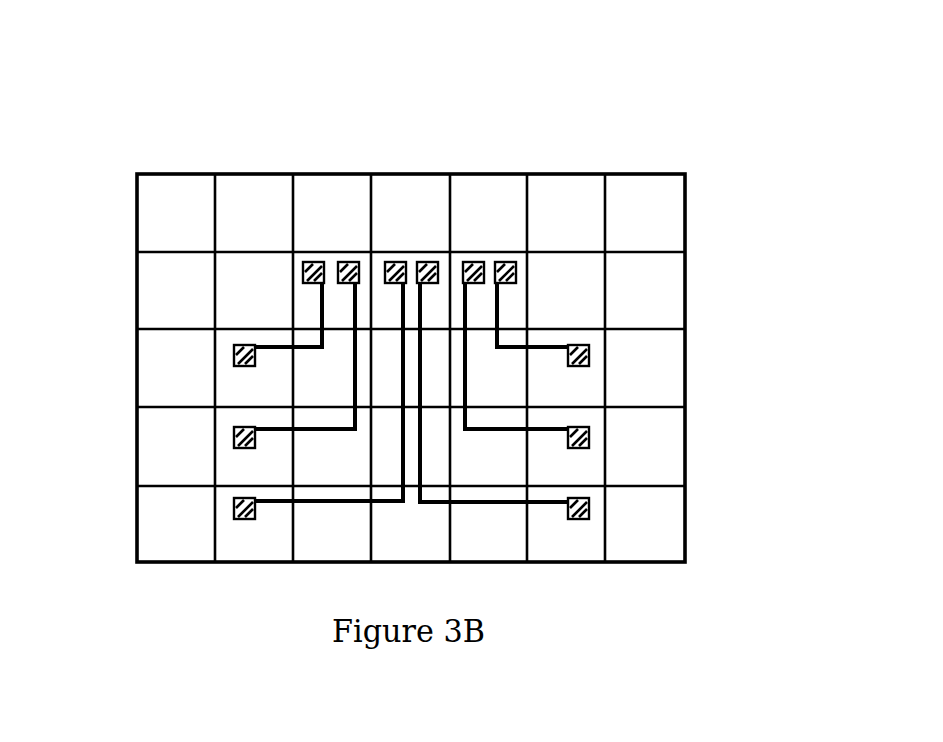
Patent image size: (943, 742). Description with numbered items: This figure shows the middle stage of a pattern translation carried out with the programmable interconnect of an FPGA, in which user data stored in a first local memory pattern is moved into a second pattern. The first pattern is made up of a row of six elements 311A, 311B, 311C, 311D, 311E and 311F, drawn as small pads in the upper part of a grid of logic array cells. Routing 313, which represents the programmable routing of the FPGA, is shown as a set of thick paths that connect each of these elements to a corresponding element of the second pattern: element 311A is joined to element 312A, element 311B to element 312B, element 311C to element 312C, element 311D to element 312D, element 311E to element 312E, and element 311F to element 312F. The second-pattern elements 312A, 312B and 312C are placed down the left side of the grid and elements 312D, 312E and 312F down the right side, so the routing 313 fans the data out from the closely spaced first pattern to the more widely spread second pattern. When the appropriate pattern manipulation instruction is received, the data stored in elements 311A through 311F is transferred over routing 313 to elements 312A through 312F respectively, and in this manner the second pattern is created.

The element of first local memory pattern 311A is at (313, 262).
The element of first local memory pattern 311B is at (347, 262).
The element of first local memory pattern 311C is at (395, 262).
The element of first local memory pattern 311D is at (426, 262).
The element of first local memory pattern 311E is at (472, 262).
The element of first local memory pattern 311F is at (503, 262).
The element of second pattern 312A is at (246, 368).
The element of second pattern 312B is at (246, 449).
The element of second pattern 312C is at (246, 521).
The element of second pattern 312D is at (577, 521).
The element of second pattern 312E is at (577, 449).
The element of second pattern 312F is at (577, 368).
The routing 313 is at (540, 345).